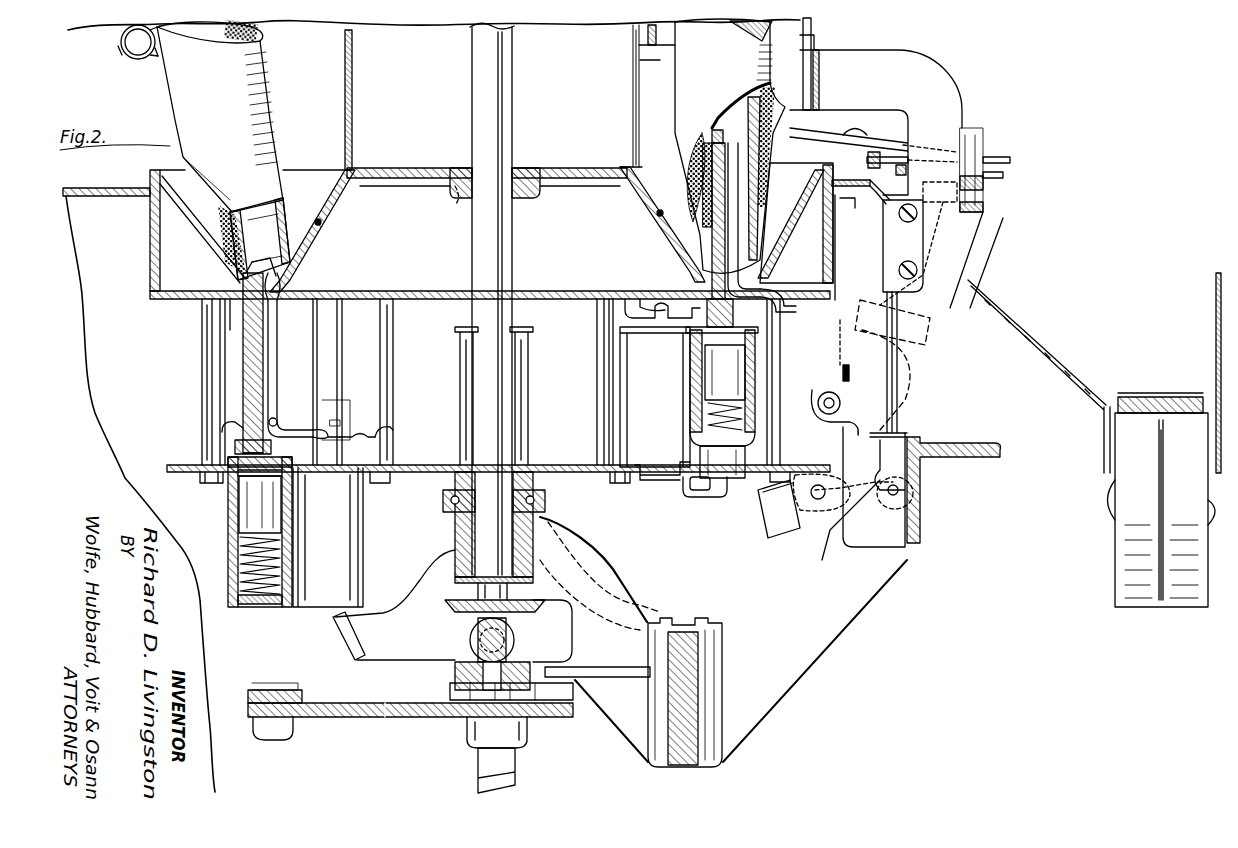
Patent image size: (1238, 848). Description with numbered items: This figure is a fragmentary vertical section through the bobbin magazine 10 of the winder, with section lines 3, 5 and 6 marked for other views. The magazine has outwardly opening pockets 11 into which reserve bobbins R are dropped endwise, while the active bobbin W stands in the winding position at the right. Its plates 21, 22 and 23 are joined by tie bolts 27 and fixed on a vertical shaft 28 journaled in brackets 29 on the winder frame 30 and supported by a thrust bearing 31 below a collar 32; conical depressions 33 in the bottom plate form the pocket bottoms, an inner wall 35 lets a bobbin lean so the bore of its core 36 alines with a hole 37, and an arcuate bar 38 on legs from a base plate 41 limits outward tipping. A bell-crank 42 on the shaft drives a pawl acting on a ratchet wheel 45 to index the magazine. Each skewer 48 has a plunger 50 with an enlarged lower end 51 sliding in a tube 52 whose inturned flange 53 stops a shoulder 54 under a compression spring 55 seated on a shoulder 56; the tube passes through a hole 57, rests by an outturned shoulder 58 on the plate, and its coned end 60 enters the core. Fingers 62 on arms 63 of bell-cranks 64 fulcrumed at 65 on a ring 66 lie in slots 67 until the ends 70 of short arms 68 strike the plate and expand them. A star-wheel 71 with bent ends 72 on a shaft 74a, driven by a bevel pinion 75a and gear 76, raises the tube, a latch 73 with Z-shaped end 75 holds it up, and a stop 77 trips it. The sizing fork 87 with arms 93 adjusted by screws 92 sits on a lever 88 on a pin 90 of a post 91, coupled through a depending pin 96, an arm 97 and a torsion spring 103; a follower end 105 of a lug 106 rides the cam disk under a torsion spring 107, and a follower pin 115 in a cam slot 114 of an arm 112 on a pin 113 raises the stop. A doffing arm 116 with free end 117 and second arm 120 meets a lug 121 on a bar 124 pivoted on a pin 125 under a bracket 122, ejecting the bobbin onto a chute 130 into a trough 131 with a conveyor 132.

The section line 3- 3 is at (150, 480).
The section line 5- 5 is at (73, 23).
The section line 6- 6 is at (460, 292).
The magazine 10 is at (165, 95).
The pockets 11 is at (322, 78).
The reserve bobbins R is at (268, 58).
The active bobbin W is at (688, 88).
The lowermost plate 21 is at (424, 465).
The plate 22 is at (415, 300).
The plate 23 is at (392, 180).
The tie bolts 27 is at (205, 377).
The vertical shaft 28 is at (478, 130).
The brackets 29 is at (585, 535).
The winder frame 30 is at (698, 672).
The thrust bearing 31 is at (452, 505).
The collar 32 is at (455, 483).
The conical depressions 33 is at (318, 222).
The inner wall 35 is at (352, 115).
The core 36 is at (222, 200).
The hole 37 is at (245, 305).
The arcuate bar 38 is at (122, 55).
The base plate 41 is at (122, 190).
The bell-crank 42 is at (392, 720).
The ratchet wheel 45 is at (415, 692).
The skewer 48 is at (243, 348).
The plunger 50 is at (245, 380).
The enlarged lower end 51 is at (246, 520).
The tube 52 is at (462, 368).
The inturned flange 53 is at (230, 490).
The shoulder 54 is at (240, 508).
The compression spring 55 is at (243, 566).
The shoulder 56 is at (286, 605).
The hole 57 is at (305, 470).
The outturned shoulder 58 is at (230, 452).
The coned end 60 is at (228, 340).
The fingers 62 is at (272, 300).
The arms 63 is at (272, 340).
The bell-cranks 64 is at (770, 265).
The fulcrum 65 is at (275, 420).
The ring 66 is at (280, 425).
The slots 67 is at (720, 122).
The short arms 68 is at (222, 432).
The ends 70 is at (385, 428).
The star-wheel 71 is at (440, 585).
The laterally bent ends 72 is at (345, 640).
The latch 73 is at (690, 505).
The horizontal shaft 74a is at (470, 658).
The Z-shaped end 75 is at (640, 478).
The bevel pinion 75a is at (478, 638).
The gear 76 is at (462, 606).
The stop 77 is at (762, 518).
The fork 87 is at (828, 128).
The lever 88 is at (990, 225).
The pin 90 is at (826, 395).
The post 91 is at (890, 380).
The screws 92 is at (855, 128).
The fork arms 93 is at (903, 246).
The depending pin 96 is at (880, 166).
The arm 97 is at (1010, 160).
The torsion spring 103 is at (1003, 176).
The follower end 105 is at (840, 335).
The lug 106 is at (945, 318).
The torsion spring 107 is at (845, 370).
The arm 112 is at (805, 532).
The pin 113 is at (900, 500).
The cam slot 114 is at (848, 522).
The follower pin 115 is at (828, 532).
The arm 116 is at (655, 48).
The free end 117 is at (648, 36).
The second arm 120 is at (758, 46).
The lug 121 is at (815, 38).
The bracket 122 is at (925, 72).
The bar 124 is at (822, 65).
The pin 125 is at (765, 66).
The chute 130 is at (1035, 335).
The trough 131 is at (1177, 323).
The conveyor 132 is at (1175, 395).